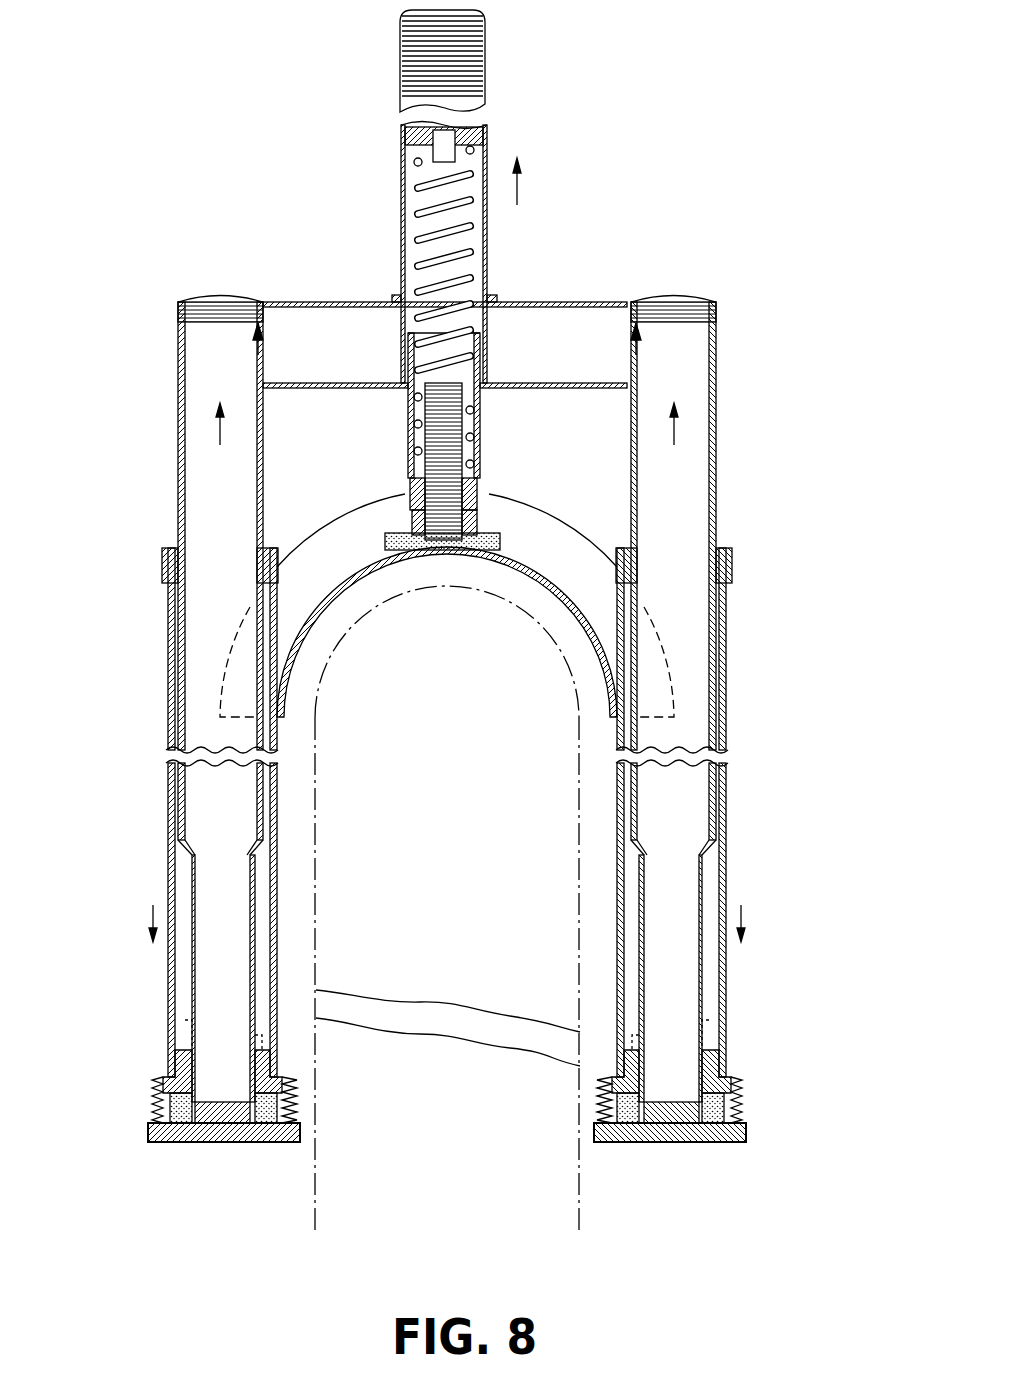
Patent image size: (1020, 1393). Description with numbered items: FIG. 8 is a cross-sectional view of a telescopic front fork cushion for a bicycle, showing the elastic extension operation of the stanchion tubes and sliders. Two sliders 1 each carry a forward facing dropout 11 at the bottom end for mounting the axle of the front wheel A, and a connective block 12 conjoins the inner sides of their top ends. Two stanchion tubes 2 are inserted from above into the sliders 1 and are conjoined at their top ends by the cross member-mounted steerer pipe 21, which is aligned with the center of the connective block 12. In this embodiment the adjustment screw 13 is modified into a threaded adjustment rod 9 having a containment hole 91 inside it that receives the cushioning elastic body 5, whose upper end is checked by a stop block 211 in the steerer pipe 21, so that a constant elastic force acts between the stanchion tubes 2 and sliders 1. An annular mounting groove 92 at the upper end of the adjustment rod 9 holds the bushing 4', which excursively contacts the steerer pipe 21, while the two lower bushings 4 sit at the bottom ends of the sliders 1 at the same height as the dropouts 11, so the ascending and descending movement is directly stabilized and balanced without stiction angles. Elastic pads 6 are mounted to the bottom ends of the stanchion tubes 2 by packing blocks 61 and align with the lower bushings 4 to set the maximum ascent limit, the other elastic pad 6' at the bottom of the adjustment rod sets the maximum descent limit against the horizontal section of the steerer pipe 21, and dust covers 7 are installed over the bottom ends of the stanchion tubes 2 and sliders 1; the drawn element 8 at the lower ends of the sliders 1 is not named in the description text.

The slider 1 is at (170, 648).
The stanchion tube 2 is at (178, 440).
The bushing 4 is at (458, 1063).
The bushing 4' is at (377, 343).
The cushioning elastic body 5 is at (437, 238).
The elastic pad 6 is at (437, 1122).
The elastic pad 6' is at (404, 501).
The dust cover 7 is at (165, 560).
The threaded portion 8 is at (155, 1095).
The threaded adjustment rod 9 is at (442, 461).
The dropout 11 is at (260, 1035).
The connective block 12 is at (560, 540).
The adjustment screw 13 is at (458, 446).
The cross member-mounted steerer pipe 21 is at (487, 252).
The packing block 61 is at (210, 1132).
The containment hole 91 is at (485, 388).
The annular mounting groove 92 is at (470, 405).
The stop block 211 is at (478, 132).
The front wheel A is at (335, 835).